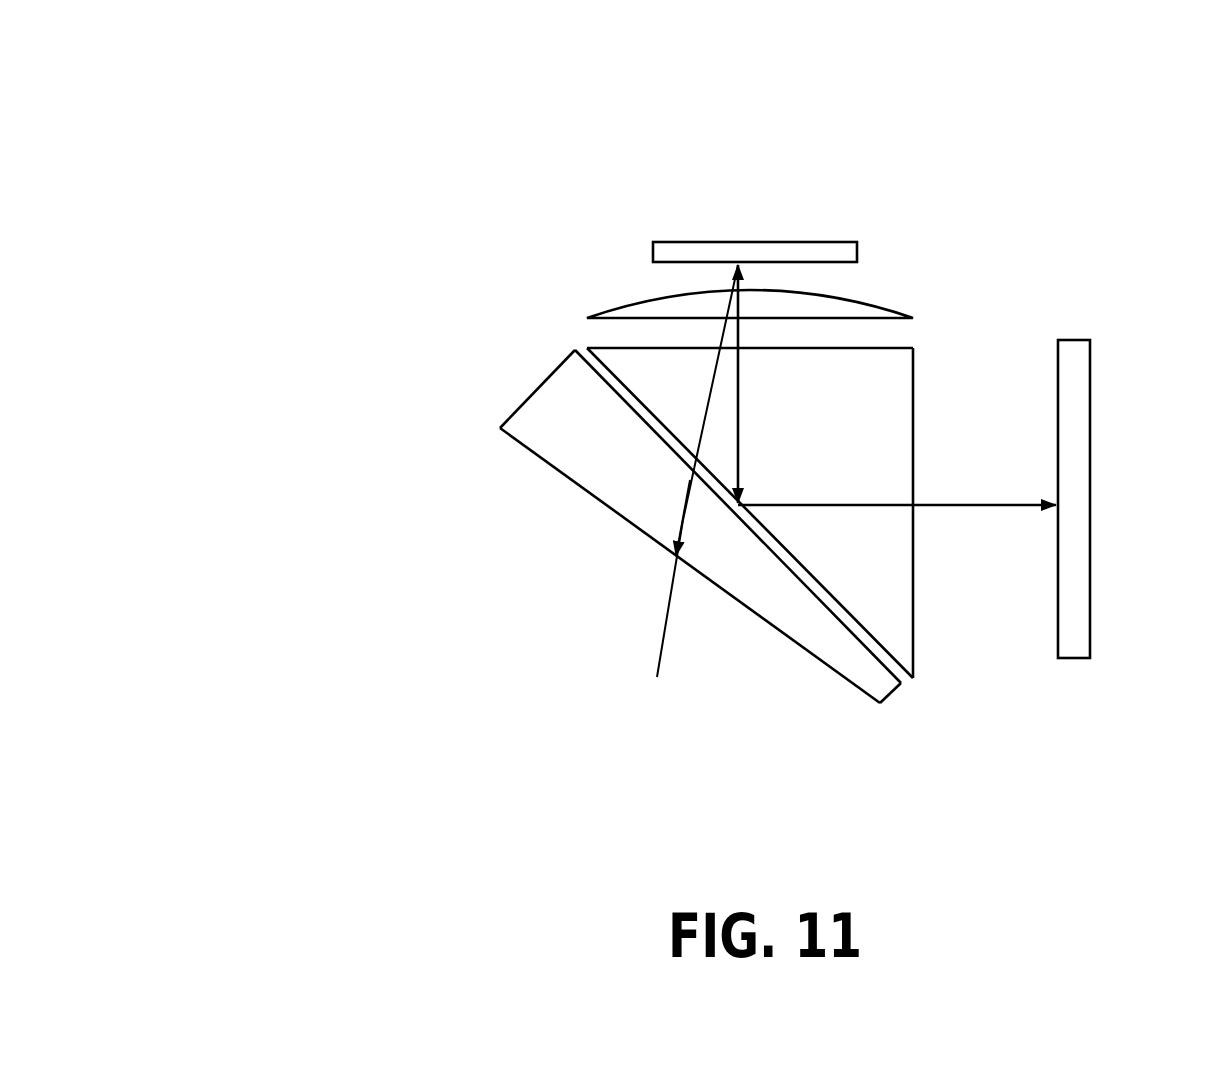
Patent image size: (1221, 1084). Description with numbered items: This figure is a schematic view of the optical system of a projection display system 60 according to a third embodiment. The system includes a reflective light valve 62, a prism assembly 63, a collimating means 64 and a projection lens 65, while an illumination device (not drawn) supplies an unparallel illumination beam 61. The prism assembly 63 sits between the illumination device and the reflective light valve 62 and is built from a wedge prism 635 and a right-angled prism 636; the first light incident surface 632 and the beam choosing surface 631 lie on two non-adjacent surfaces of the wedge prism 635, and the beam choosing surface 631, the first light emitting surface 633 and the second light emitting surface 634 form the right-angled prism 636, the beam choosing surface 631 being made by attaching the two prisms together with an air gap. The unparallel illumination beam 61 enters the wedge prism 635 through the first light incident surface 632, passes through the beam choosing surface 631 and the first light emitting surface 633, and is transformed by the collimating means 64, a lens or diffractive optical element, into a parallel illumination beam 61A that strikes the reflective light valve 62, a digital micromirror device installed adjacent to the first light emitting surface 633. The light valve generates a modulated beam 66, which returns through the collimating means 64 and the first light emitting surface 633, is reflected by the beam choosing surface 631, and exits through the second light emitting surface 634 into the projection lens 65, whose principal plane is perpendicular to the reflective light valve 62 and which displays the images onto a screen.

The projection display system 60 is at (291, 190).
The unparallel illumination beam 61 is at (660, 630).
The parallel illumination beam 61A is at (733, 287).
The reflective light valve 62 is at (803, 241).
The prism assembly 63 is at (584, 500).
The beam choosing surface 631 is at (588, 362).
The first light incident surface 632 is at (560, 472).
The first light emitting surface 633 is at (895, 348).
The second light emitting surface 634 is at (913, 597).
The wedge prism 635 is at (542, 413).
The right-angled prism 636 is at (890, 623).
The collimating means 64 is at (642, 310).
The projection lens 65 is at (1092, 373).
The modulated beam 66 is at (740, 420).